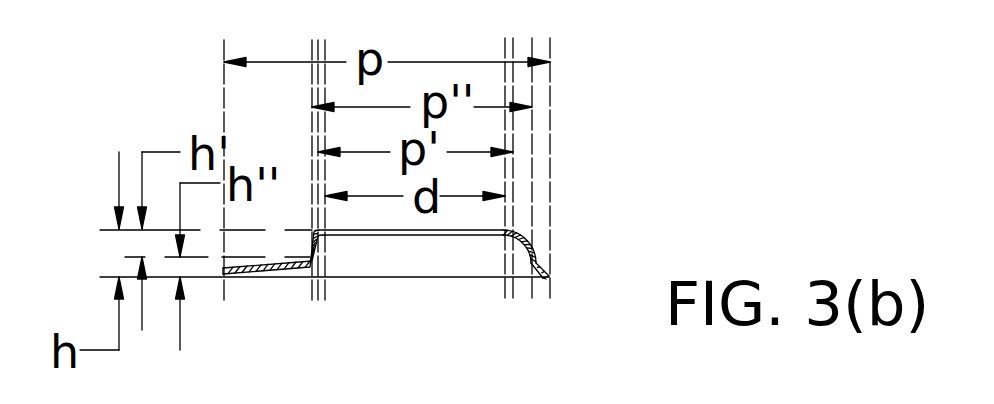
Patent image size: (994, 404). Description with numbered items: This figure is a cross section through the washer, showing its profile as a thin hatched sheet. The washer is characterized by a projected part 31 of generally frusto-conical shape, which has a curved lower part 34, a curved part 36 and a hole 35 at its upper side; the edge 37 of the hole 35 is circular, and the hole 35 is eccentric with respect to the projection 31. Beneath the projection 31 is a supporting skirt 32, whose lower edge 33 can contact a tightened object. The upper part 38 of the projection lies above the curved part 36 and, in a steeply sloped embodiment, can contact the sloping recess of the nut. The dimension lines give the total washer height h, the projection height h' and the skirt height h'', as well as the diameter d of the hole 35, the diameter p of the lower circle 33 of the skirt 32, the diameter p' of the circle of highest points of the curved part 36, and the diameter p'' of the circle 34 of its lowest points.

The projected part 31 is at (594, 210).
The supporting skirt 32 is at (546, 268).
The lower edge of the skirt 33 is at (552, 281).
The curved lower part 34 is at (570, 260).
The hole 35 is at (483, 230).
The curved part 36 is at (532, 247).
The edge of the hole 37 is at (313, 228).
The upper part of the projection 38 is at (515, 230).